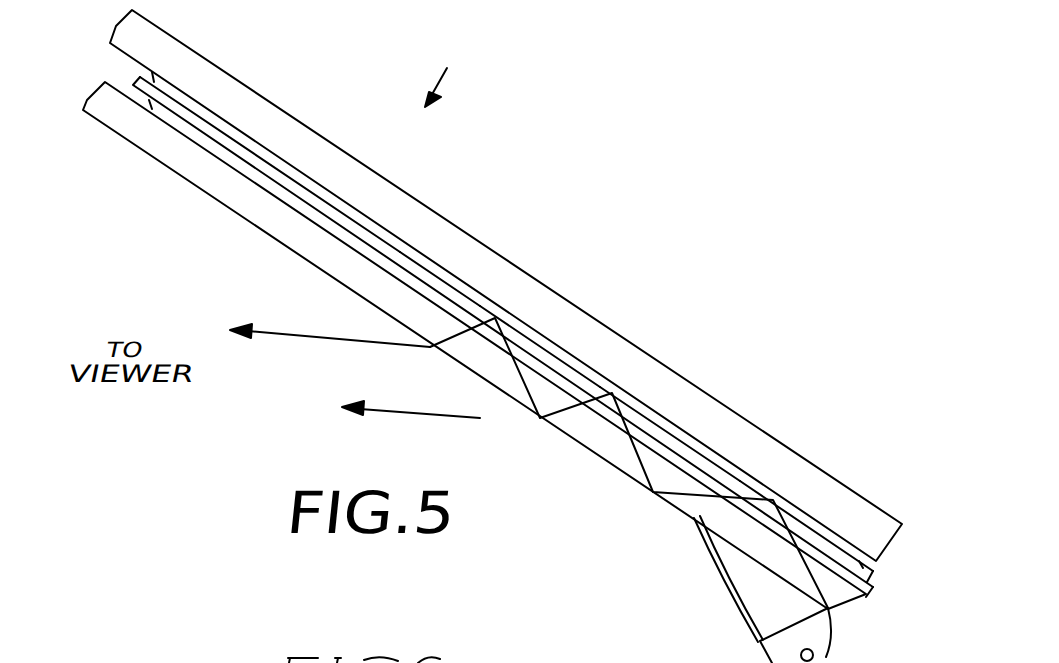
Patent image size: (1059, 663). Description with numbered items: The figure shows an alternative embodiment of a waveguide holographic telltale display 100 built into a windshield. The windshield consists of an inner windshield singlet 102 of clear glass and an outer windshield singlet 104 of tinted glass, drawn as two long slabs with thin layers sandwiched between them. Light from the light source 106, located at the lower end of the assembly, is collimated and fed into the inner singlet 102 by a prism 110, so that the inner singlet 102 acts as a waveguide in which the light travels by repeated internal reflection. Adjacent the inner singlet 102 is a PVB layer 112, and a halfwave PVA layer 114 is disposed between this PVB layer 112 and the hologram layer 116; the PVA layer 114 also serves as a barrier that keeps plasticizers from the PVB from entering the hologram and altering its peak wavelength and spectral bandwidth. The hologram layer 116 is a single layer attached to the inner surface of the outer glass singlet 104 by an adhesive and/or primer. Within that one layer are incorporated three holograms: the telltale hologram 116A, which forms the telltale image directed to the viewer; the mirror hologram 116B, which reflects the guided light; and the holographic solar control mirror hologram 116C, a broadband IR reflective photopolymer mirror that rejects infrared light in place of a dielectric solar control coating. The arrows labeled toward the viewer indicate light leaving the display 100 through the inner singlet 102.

The display 100 is at (458, 70).
The inner windshield singlet 102 is at (246, 206).
The outer windshield singlet 104 is at (287, 77).
The light source 106 is at (842, 653).
The prism 110 is at (748, 592).
The PVB layer 112 is at (167, 115).
The halfwave PVA layer 114 is at (133, 79).
The hologram layer 116 is at (207, 37).
The telltale hologram 116A is at (587, 290).
The mirror hologram 116B is at (693, 440).
The holographic solar control mirror hologram 116C is at (466, 220).